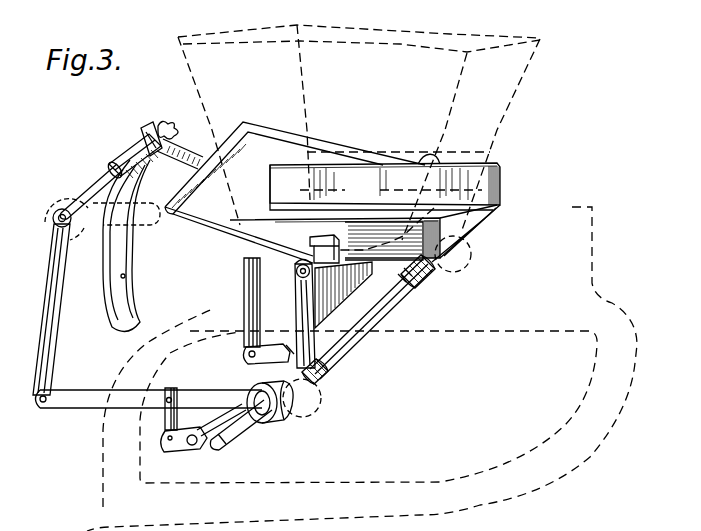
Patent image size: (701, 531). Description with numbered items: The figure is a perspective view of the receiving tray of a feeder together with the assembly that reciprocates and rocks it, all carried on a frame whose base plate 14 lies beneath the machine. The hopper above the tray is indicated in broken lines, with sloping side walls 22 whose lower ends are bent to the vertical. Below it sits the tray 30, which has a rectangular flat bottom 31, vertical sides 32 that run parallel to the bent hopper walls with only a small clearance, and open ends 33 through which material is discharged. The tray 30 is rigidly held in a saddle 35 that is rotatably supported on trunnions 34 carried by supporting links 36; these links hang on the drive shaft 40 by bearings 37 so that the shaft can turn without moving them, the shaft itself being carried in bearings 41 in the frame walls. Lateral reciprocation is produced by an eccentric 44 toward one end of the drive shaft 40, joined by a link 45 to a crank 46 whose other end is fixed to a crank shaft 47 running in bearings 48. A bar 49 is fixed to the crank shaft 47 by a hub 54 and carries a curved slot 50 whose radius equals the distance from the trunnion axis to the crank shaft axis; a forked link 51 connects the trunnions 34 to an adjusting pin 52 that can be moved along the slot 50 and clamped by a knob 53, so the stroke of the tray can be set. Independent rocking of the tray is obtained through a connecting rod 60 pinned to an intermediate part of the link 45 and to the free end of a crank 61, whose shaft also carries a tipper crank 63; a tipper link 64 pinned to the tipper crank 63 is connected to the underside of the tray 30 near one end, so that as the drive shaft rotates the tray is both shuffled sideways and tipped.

The base plate 14 is at (567, 402).
The side walls 22 is at (455, 162).
The tray 30 is at (511, 185).
The flat bottom 31 is at (318, 217).
The vertical sides 32 is at (341, 230).
The ends 33 is at (486, 219).
The trunnions 34 is at (369, 255).
The saddle 35 is at (416, 286).
The supporting links 36 is at (345, 337).
The bearings 37 is at (432, 285).
The drive shaft 40 is at (373, 315).
The bearings 41 is at (468, 262).
The eccentric 44 is at (296, 414).
The link 45 is at (73, 409).
The crank 46 is at (43, 316).
The crank shaft 47 is at (110, 177).
The bearings 48 is at (54, 200).
The bar 49 is at (134, 247).
The slot 50 is at (126, 276).
The forked link 51 is at (290, 130).
The adjusting pin 52 is at (180, 154).
The knob 53 is at (156, 125).
The hub 54 is at (136, 144).
The connecting rod 60 is at (164, 414).
The crank 61 is at (182, 443).
The tipper crank 63 is at (262, 346).
The tipper link 64 is at (243, 285).